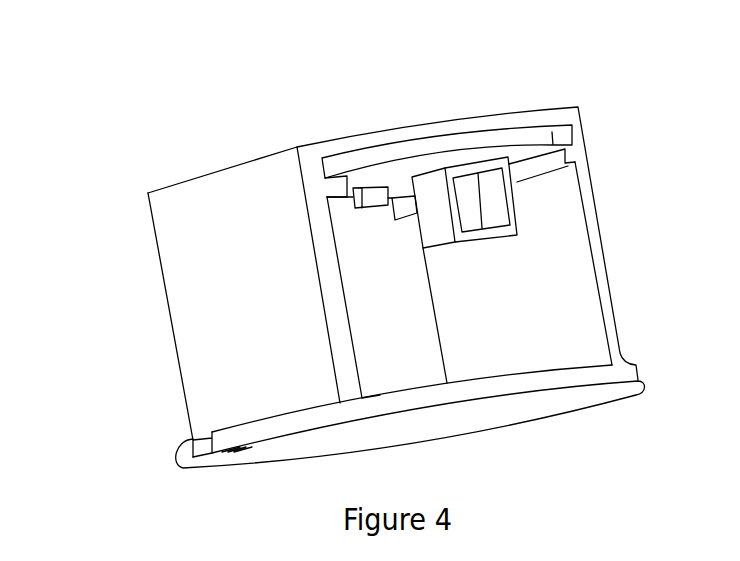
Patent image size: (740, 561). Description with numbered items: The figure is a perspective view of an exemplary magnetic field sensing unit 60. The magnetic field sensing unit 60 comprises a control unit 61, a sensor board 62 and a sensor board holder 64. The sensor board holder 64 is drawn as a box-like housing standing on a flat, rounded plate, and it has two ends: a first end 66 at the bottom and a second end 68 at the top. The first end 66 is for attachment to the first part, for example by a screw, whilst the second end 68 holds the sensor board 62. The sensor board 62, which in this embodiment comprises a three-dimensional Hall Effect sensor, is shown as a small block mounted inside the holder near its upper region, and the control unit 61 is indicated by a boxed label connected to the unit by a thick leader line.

The magnetic field sensing unit 60 is at (141, 143).
The control unit 61 is at (385, 162).
The sensor board 62 is at (456, 140).
The sensor board holder 64 is at (178, 286).
The first end 66 is at (434, 439).
The second end 68 is at (513, 118).